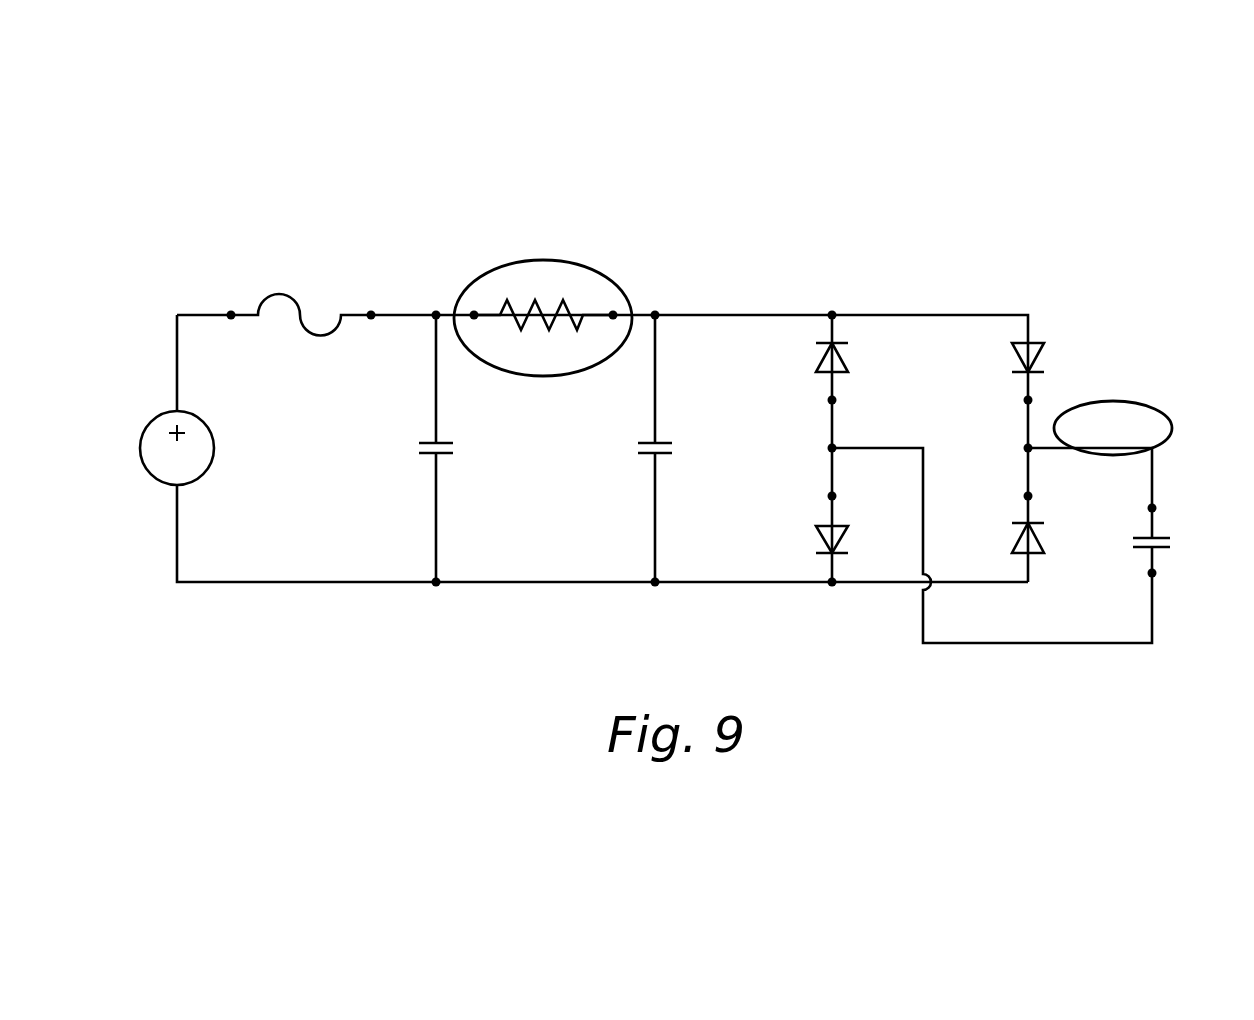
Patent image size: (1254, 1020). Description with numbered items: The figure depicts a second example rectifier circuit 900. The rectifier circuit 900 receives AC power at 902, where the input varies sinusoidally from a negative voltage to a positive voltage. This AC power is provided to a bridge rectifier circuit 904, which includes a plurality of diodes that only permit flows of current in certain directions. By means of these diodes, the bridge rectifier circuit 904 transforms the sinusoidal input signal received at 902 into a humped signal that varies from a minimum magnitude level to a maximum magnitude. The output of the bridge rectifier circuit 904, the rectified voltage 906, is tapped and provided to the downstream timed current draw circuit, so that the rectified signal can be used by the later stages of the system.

The rectifier circuit 900 is at (294, 202).
The AC power input 902 is at (177, 377).
The bridge rectifier circuit 904 is at (953, 313).
The V_rect 906 is at (1127, 402).